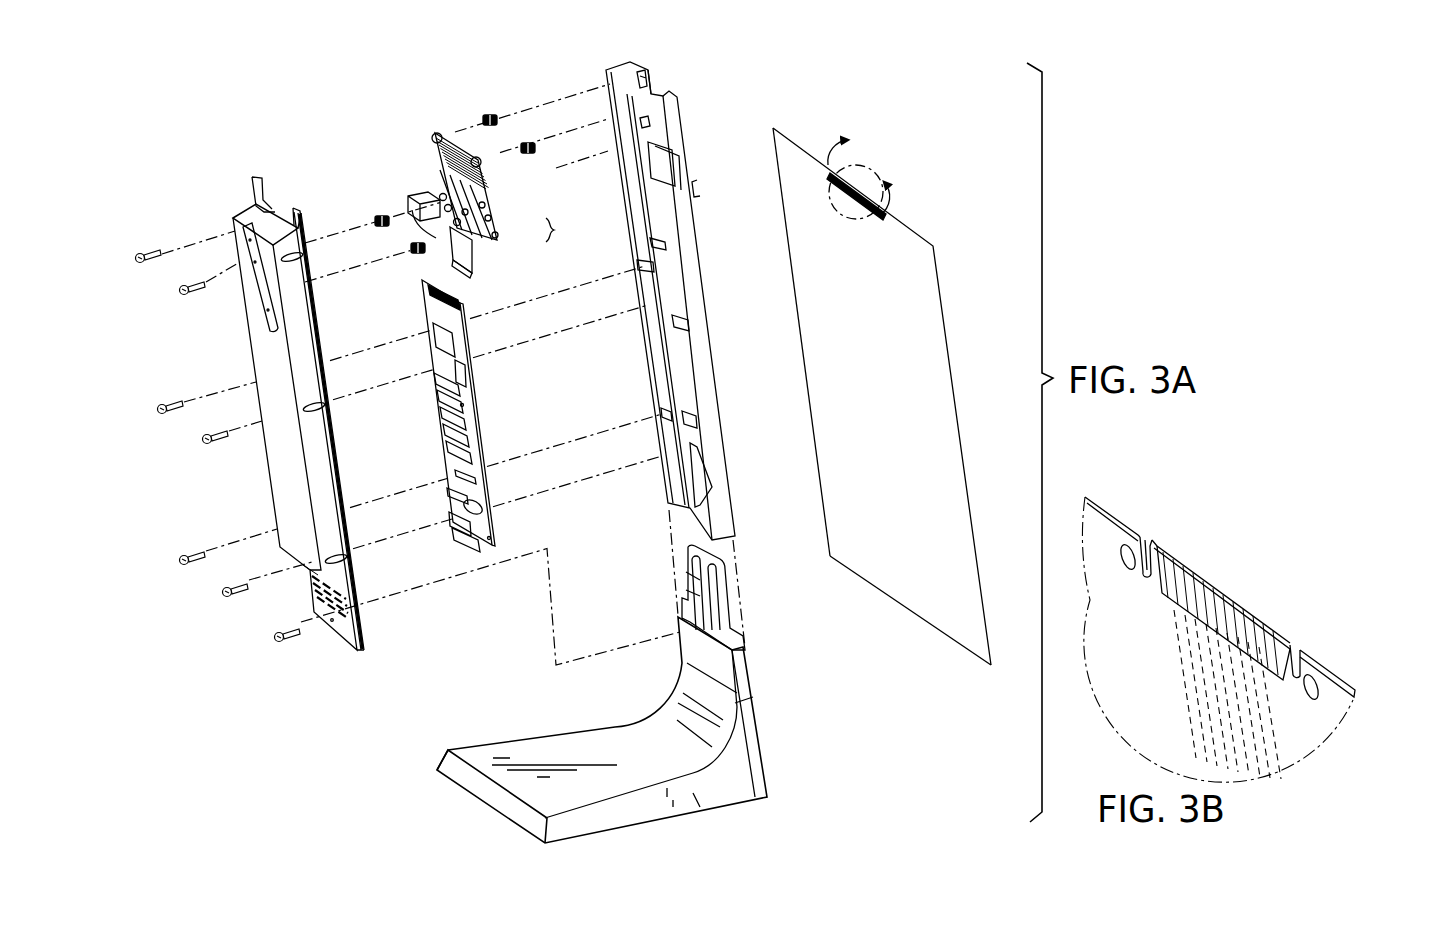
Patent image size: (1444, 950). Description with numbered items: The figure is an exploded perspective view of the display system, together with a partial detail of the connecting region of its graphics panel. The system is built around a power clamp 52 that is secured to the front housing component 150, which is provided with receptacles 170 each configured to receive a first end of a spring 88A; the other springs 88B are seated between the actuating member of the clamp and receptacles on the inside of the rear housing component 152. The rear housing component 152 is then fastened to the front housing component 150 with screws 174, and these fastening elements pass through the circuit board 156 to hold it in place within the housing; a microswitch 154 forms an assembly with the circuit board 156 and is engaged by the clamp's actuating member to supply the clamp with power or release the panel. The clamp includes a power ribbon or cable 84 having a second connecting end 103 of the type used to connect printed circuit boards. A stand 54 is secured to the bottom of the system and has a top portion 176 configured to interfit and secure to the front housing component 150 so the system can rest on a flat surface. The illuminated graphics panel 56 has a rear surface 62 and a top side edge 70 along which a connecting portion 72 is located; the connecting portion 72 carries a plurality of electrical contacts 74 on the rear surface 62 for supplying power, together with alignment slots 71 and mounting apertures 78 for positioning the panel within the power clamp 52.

In FIG. 3A, the power clamp 52 is at (441, 130).
In FIG. 3A, the stand 54 is at (695, 795).
In FIG. 3A, the illuminated graphics panel 56 is at (800, 363).
In FIG. 3B, the illuminated graphics panel 56 is at (1145, 670).
In FIG. 3A, the rear surface 62 is at (920, 598).
In FIG. 3A, the top side edge 70 is at (918, 236).
In FIG. 3B, the top side edge 70 is at (1105, 510).
In FIG. 3B, the alignment slots 71 is at (1146, 553).
In FIG. 3B, the connecting portion 72 is at (1176, 563).
In FIG. 3B, the electrical contacts 74 is at (1270, 641).
In FIG. 3B, the mounting apertures 78 is at (1318, 686).
In FIG. 3A, the power ribbon or cable 84 is at (478, 243).
In FIG. 3A, the springs 88A is at (490, 113).
In FIG. 3A, the springs 88B is at (379, 212).
In FIG. 3A, the second connecting end 103 is at (470, 268).
In FIG. 3A, the front housing component 150 is at (681, 130).
In FIG. 3A, the rear housing component 152 is at (265, 355).
In FIG. 3A, the microswitch 154 is at (421, 196).
In FIG. 3A, the circuit board 156 is at (488, 546).
In FIG. 3A, the receptacles 170 is at (643, 72).
In FIG. 3A, the screws 174 is at (225, 598).
In FIG. 3A, the top portion 176 is at (717, 603).